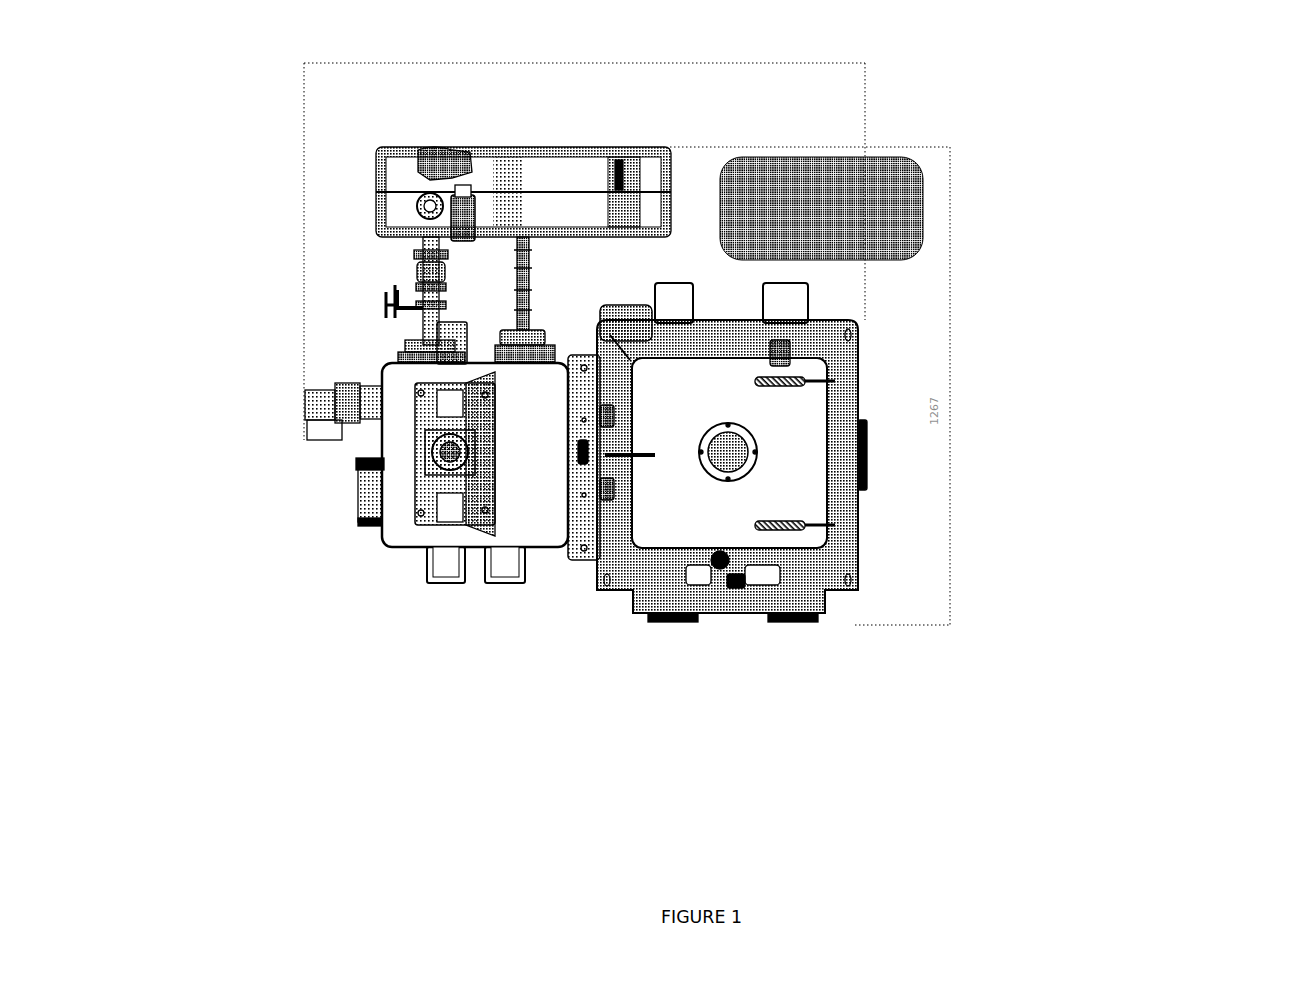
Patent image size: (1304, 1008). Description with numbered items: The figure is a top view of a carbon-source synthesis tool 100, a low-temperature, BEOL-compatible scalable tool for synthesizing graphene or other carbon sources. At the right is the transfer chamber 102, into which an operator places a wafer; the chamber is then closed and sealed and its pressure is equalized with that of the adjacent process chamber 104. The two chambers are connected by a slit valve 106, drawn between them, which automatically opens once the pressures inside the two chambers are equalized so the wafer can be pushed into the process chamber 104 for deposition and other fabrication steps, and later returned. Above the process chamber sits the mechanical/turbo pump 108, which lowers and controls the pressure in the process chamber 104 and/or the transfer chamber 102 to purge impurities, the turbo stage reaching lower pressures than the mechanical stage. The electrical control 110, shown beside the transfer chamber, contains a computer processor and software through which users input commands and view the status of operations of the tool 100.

The carbon-source synthesis tool 100 is at (357, 820).
The transfer chamber 102 is at (877, 467).
The process chamber 104 is at (353, 475).
The slit valve 106 is at (620, 513).
The mechanical/turbo pump 108 is at (603, 140).
The electrical control 110 is at (924, 201).